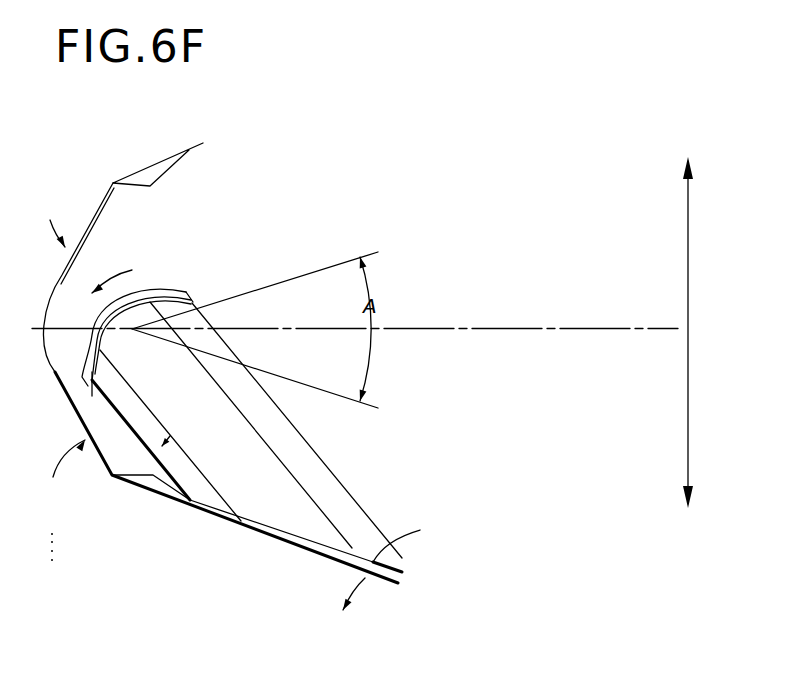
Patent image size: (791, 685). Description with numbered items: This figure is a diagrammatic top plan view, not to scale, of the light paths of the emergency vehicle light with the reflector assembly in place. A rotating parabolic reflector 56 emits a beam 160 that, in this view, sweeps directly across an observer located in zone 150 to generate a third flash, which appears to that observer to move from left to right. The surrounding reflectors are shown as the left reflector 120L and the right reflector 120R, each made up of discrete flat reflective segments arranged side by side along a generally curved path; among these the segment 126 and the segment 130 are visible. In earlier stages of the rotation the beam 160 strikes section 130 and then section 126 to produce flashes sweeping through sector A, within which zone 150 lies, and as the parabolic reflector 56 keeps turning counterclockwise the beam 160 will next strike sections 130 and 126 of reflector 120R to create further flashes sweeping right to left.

The parabolic reflector 56 is at (170, 293).
The right reflector 120R is at (85, 277).
The left reflector 120L is at (218, 442).
The reflector section 126 is at (163, 170).
The reflector section 130 is at (100, 196).
The zone 150 is at (688, 303).
The beam 160 is at (404, 567).